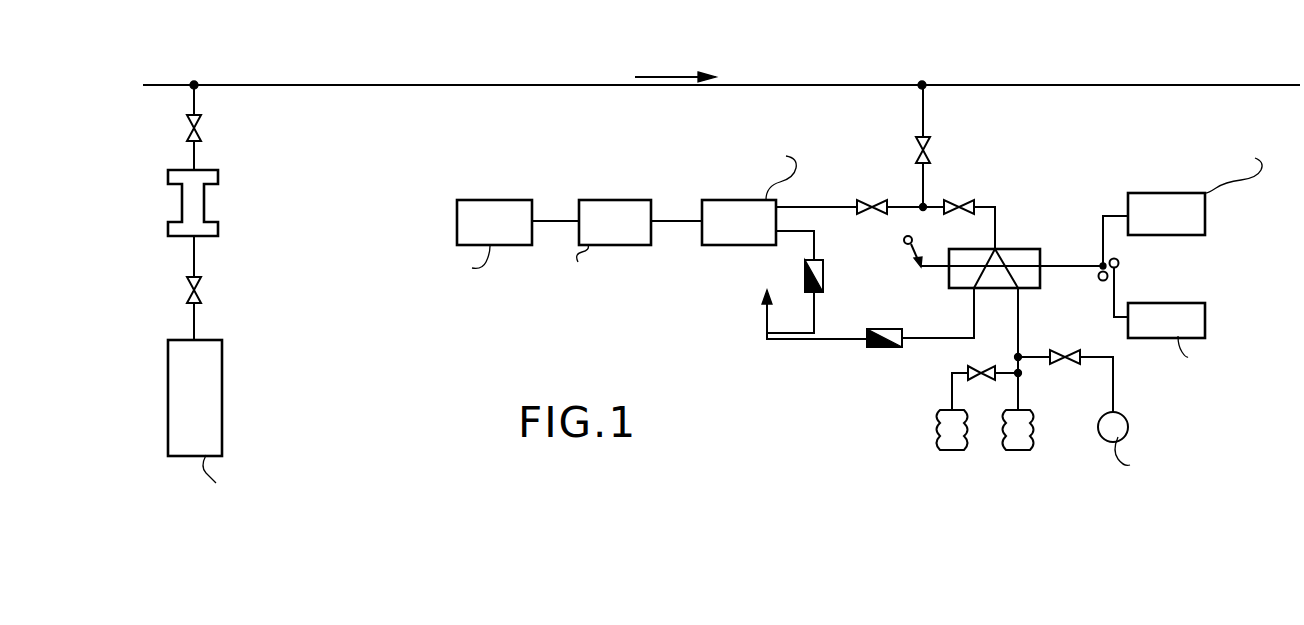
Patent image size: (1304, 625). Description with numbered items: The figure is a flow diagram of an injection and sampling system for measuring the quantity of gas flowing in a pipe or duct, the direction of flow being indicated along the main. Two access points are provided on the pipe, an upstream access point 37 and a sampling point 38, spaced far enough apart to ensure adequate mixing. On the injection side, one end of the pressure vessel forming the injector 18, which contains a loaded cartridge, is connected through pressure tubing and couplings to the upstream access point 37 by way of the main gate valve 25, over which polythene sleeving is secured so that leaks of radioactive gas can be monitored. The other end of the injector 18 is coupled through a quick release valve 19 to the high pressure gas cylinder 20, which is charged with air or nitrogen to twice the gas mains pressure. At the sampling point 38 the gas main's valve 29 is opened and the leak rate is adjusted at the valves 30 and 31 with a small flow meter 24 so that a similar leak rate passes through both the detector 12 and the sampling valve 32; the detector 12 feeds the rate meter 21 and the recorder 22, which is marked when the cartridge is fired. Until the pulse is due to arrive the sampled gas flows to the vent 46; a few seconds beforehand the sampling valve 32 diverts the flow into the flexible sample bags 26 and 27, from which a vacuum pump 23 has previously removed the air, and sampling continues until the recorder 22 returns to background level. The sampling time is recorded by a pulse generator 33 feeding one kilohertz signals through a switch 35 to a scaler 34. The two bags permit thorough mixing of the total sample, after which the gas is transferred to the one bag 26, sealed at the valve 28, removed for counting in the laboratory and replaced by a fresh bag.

The detector 12 is at (747, 200).
The injector 18 is at (218, 201).
The quick release valve 19 is at (202, 292).
The gas cylinder 20 is at (222, 386).
The rate meter 21 is at (610, 200).
The recorder 22 is at (491, 200).
The vacuum pump 23 is at (1128, 425).
The flow meter 24 is at (804, 274).
The main gate valve 25 is at (188, 128).
The flexible sample bag 26 is at (940, 433).
The flexible sample bag 27 is at (1030, 433).
The valve 28 is at (982, 371).
The gas main's valve 29 is at (930, 152).
The valve 30 is at (959, 200).
The valve 31 is at (872, 200).
The sampling valve 32 is at (1030, 248).
The pulse generator 33 is at (1176, 193).
The scaler 34 is at (1196, 303).
The switch 35 is at (1121, 263).
The upstream access point 37 is at (194, 84).
The sampling point 38 is at (922, 80).
The vent 46 is at (766, 338).